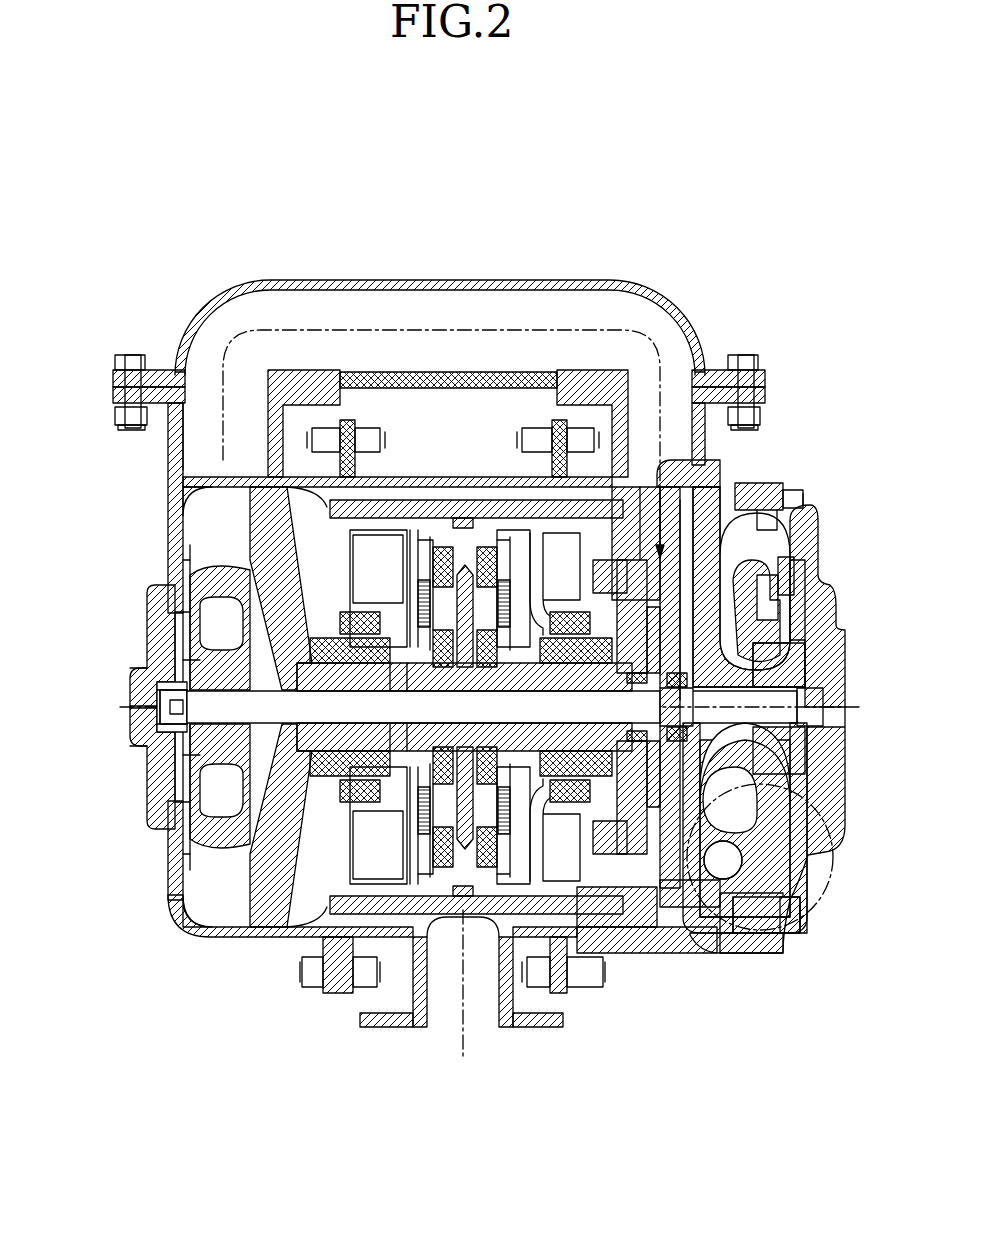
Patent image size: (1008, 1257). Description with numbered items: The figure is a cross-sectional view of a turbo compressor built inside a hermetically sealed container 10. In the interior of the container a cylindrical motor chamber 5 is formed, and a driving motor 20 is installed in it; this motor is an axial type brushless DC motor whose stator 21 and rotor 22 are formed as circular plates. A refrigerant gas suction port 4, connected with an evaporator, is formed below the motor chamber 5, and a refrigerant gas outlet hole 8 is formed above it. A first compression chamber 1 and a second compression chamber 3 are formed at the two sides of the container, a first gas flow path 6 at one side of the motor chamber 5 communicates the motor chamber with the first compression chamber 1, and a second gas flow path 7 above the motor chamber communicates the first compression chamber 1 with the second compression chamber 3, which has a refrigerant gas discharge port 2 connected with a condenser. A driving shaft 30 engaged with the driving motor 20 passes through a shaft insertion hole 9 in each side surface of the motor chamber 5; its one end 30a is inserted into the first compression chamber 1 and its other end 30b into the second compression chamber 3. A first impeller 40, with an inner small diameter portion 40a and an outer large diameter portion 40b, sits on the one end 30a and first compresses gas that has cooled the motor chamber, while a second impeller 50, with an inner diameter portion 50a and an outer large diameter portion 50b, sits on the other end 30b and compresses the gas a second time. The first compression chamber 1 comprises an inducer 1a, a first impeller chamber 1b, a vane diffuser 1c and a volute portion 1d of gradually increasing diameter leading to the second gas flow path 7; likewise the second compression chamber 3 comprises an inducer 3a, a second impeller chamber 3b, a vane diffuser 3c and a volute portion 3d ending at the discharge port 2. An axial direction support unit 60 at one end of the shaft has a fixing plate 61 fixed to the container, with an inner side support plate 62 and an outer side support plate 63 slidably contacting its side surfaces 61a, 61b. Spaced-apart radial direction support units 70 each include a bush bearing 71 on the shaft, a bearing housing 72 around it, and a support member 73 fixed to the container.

The first compression chamber 1 is at (180, 950).
The inducer 1a is at (190, 660).
The first impeller chamber 1b is at (178, 625).
The vane diffuser 1c is at (185, 605).
The volute portion 1d is at (200, 513).
The refrigerant gas discharge port 2 is at (735, 868).
The second compression chamber 3 is at (796, 723).
The inducer 3a is at (755, 547).
The second impeller chamber 3b is at (750, 620).
The vane diffuser 3c is at (792, 578).
The volute portion 3d is at (782, 500).
The refrigerant gas suction port 4 is at (485, 1013).
The motor chamber 5 is at (377, 550).
The first gas flow path 6 is at (275, 488).
The second gas flow path 7 is at (530, 300).
The refrigerant gas outlet hole 8 is at (465, 520).
The shaft insertion hole 9 is at (180, 800).
The hermetically sealed container 10 is at (318, 1000).
The driving motor 20 is at (478, 719).
The stator 21 is at (445, 600).
The rotor 22 is at (505, 600).
The driving shaft 30 is at (538, 701).
The one end of the driving shaft 30a is at (158, 710).
The other end of the driving shaft 30b is at (815, 703).
The first impeller 40 is at (140, 752).
The inner small diameter portion 40a is at (150, 783).
The outer large diameter portion 40b is at (150, 665).
The second impeller 50 is at (815, 750).
The inner diameter portion 50a is at (780, 660).
The outer large diameter portion 50b is at (800, 745).
The axial direction support unit 60 is at (690, 420).
The fixing plate 61 is at (700, 520).
The side surface of the fixing plate 61a is at (652, 545).
The side surface of the fixing plate 61b is at (700, 530).
The inner side support plate 62 is at (640, 880).
The outer side support plate 63 is at (690, 875).
The radial direction support unit 70 is at (257, 830).
The bush bearing 71 is at (312, 670).
The bearing housing 72 is at (332, 645).
The support member 73 is at (310, 945).